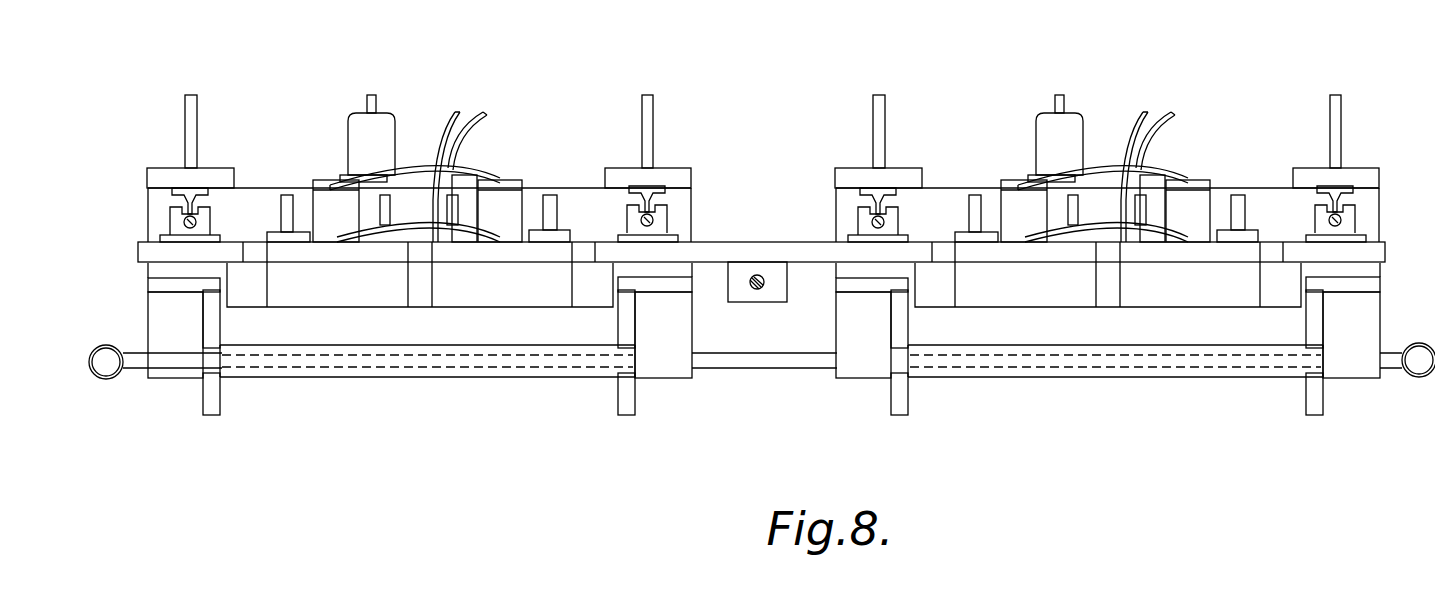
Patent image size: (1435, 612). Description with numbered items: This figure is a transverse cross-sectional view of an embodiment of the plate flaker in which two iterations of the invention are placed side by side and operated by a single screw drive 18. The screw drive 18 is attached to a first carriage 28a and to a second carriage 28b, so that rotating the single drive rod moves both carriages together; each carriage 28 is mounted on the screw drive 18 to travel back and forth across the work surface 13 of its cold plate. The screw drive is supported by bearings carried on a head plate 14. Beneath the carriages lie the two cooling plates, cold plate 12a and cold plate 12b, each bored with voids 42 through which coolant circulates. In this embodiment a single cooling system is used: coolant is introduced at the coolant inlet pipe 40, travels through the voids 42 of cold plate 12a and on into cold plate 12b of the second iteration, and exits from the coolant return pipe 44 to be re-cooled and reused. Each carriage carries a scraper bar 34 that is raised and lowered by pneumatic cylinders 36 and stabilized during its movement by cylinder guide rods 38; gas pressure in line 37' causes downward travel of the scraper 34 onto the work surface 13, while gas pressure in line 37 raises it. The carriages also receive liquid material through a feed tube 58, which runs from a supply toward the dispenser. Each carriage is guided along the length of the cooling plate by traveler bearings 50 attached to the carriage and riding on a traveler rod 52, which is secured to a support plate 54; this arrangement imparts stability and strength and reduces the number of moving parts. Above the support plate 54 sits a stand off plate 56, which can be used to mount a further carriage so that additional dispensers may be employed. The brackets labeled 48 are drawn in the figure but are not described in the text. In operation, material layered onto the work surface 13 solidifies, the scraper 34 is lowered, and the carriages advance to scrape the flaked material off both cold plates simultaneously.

The cold plate 12a is at (332, 382).
The cold plate 12b is at (1020, 378).
The work surface 13 is at (283, 343).
The head plate 14 is at (175, 338).
The screw drive 18 is at (758, 272).
The carriage 28 is at (150, 250).
The carriage 28a is at (585, 252).
The carriage 28b is at (940, 252).
The scraper bar 34 is at (518, 333).
The pneumatic cylinder 36 is at (320, 197).
The gas line 37 is at (778, 163).
The gas line 37' is at (839, 126).
The cylinder guide rod 38 is at (285, 200).
The coolant inlet pipe 40 is at (1427, 377).
The void 42 is at (417, 368).
The coolant return pipe 44 is at (105, 379).
The bracket 48 is at (150, 283).
The traveler bearing 50 is at (678, 238).
The traveler rod 52 is at (655, 218).
The support plate 54 is at (175, 170).
The stand off plate 56 is at (190, 108).
The feed tube 58 is at (365, 112).